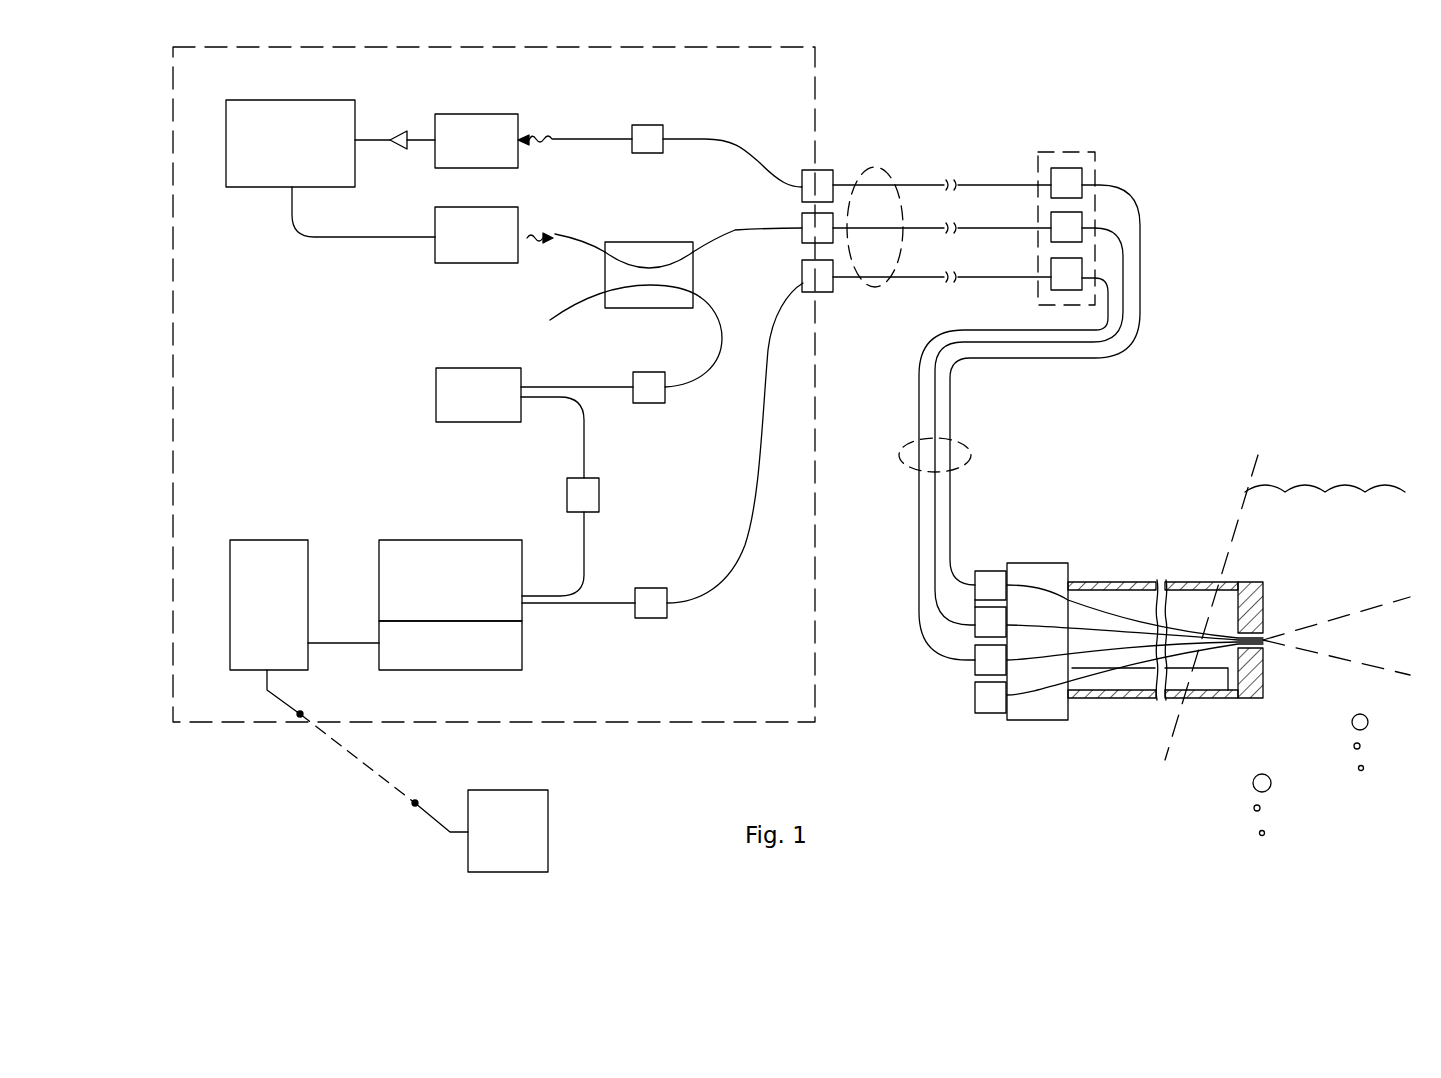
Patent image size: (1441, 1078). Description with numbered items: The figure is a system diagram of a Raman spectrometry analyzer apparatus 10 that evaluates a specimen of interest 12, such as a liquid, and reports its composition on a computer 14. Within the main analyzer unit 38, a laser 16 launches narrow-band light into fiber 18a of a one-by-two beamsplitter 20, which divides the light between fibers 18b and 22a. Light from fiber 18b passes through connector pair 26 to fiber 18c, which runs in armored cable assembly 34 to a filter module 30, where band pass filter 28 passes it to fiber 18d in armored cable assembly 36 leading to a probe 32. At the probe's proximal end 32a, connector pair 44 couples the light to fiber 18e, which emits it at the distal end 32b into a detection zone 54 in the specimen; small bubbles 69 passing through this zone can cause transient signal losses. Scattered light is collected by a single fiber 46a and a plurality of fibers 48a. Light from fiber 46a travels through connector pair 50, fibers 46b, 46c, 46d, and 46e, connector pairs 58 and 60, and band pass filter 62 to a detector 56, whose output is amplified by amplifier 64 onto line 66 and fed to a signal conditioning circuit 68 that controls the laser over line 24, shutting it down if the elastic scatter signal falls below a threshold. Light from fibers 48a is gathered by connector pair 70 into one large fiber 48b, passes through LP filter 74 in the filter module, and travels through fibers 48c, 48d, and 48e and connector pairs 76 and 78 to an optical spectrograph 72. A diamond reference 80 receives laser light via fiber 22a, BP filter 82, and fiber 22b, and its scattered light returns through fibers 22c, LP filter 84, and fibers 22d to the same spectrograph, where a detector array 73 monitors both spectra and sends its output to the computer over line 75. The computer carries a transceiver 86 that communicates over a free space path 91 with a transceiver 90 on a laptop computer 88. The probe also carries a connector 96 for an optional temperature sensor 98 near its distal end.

The analyzer apparatus 10 is at (908, 721).
The specimen of interest 12 is at (1313, 532).
The computer 14 is at (277, 617).
The laser 16 is at (492, 248).
The fiber 18a is at (555, 234).
The fiber 18b is at (715, 240).
The fiber 18c is at (878, 230).
The fiber 18d is at (1123, 263).
The fiber 18e is at (1110, 627).
The 1-by-2 beamsplitter 20 is at (628, 243).
The fiber 22a is at (708, 303).
The fiber 22b is at (552, 387).
The fibers 22c is at (585, 423).
The fibers 22d is at (585, 572).
The line 24 is at (318, 238).
The connector pair 26 is at (802, 240).
The band pass filter 28 is at (1068, 211).
The filter module 30 is at (1042, 152).
The probe 32 is at (1094, 554).
The proximal end 32a is at (986, 571).
The distal end 32b is at (1263, 690).
The armored cable assembly 34 is at (858, 178).
The armored cable assembly 36 is at (958, 456).
The main analyzer unit 38 is at (557, 48).
The connector pair 44 is at (975, 633).
The fiber 46a is at (1100, 628).
The fiber 46b is at (1090, 358).
The fiber 46c is at (1010, 183).
The fiber 46d is at (707, 139).
The fiber 46e is at (572, 139).
The fibers 48a is at (1140, 652).
The fiber 48b is at (919, 606).
The fiber 48c is at (1003, 282).
The fiber 48d is at (762, 500).
The fiber 48e is at (572, 604).
The connector pair 50 is at (975, 598).
The detection zone 54 is at (1397, 602).
The detector 56 is at (492, 154).
The connector pair 58 is at (1068, 168).
The connector pair 60 is at (802, 194).
The band pass filter 62 is at (643, 153).
The amplifier 64 is at (400, 152).
The line 66 is at (368, 138).
The signal conditioning circuit 68 is at (307, 161).
The bubbles 69 is at (1376, 720).
The connector pair 70 is at (975, 667).
The optical spectrograph 72 is at (465, 594).
The detector array 73 is at (465, 659).
The LP filter 74 is at (1103, 313).
The line 75 is at (355, 643).
The connector pair 76 is at (822, 292).
The connector pair 78 is at (652, 618).
The diamond reference 80 is at (493, 409).
The BP filter 82 is at (641, 373).
The LP filter 84 is at (599, 496).
The transceiver 86 is at (305, 710).
The laptop computer 88 is at (523, 846).
The transceiver 90 is at (420, 805).
The free space path 91 is at (345, 752).
The connector 96 is at (993, 713).
The temperature sensor 98 is at (1215, 690).